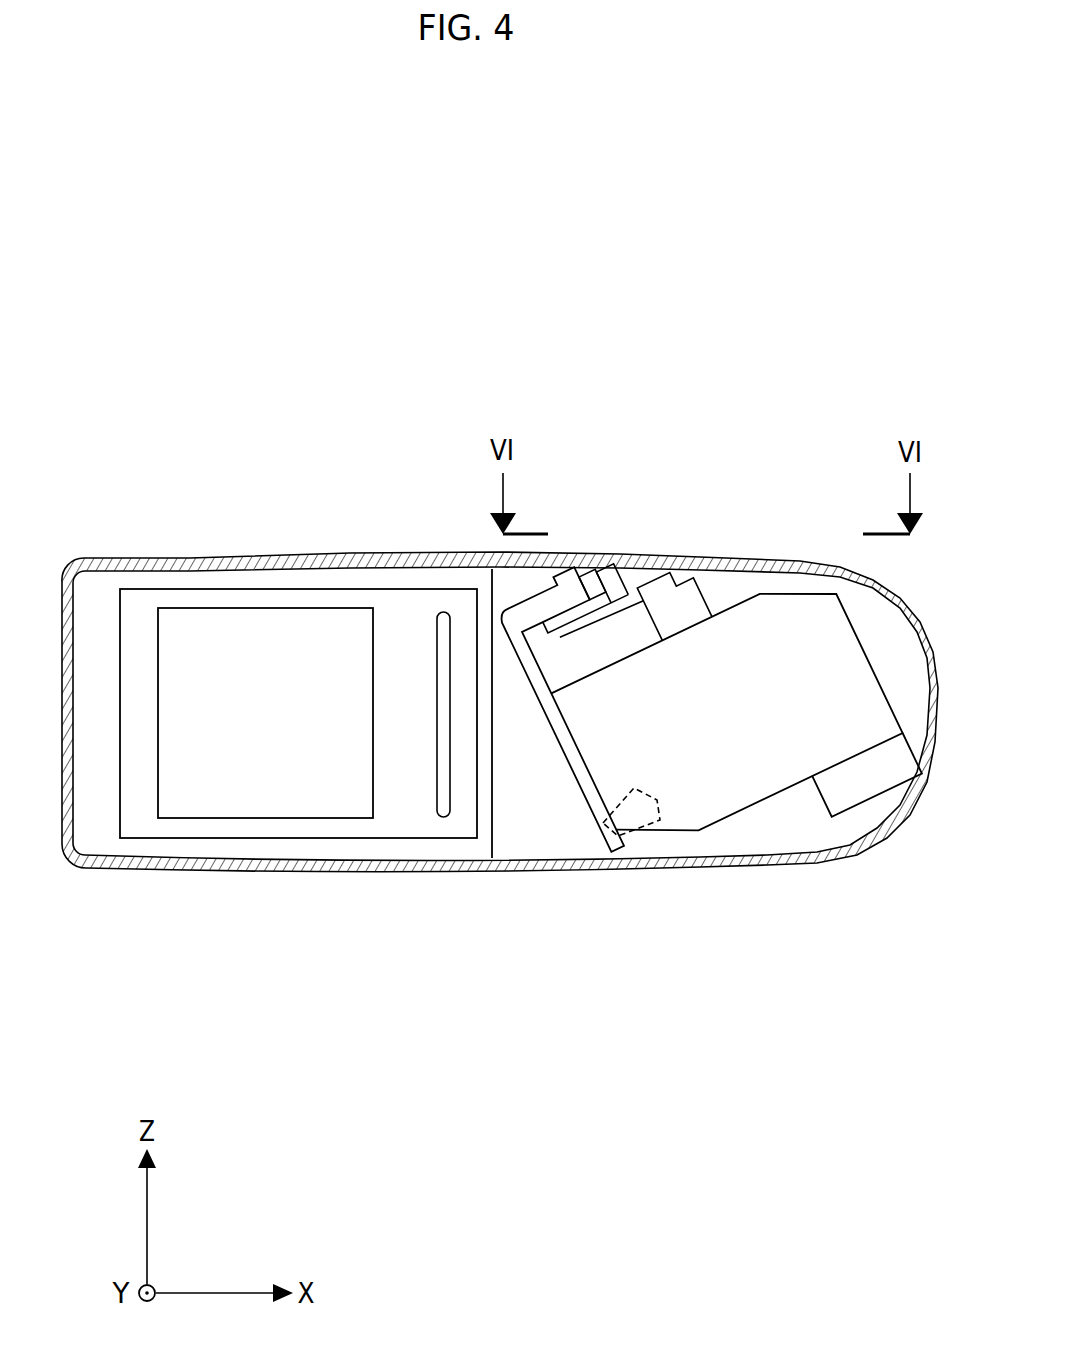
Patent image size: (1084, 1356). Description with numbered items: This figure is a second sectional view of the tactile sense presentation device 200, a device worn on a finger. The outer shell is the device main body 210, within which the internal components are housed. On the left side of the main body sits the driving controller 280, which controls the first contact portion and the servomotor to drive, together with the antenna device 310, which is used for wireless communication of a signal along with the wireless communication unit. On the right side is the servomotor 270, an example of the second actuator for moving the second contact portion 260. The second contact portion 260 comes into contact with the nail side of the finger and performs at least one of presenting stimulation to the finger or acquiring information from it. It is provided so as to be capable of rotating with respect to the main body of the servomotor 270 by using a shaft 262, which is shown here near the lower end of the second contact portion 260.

The tactile sense presentation device 200 is at (364, 328).
The device main body 210 is at (193, 560).
The second contact portion 260 is at (578, 787).
The shaft 262 is at (660, 820).
The servomotor 270 is at (787, 612).
The driving controller 280 is at (140, 822).
The antenna device 310 is at (437, 722).